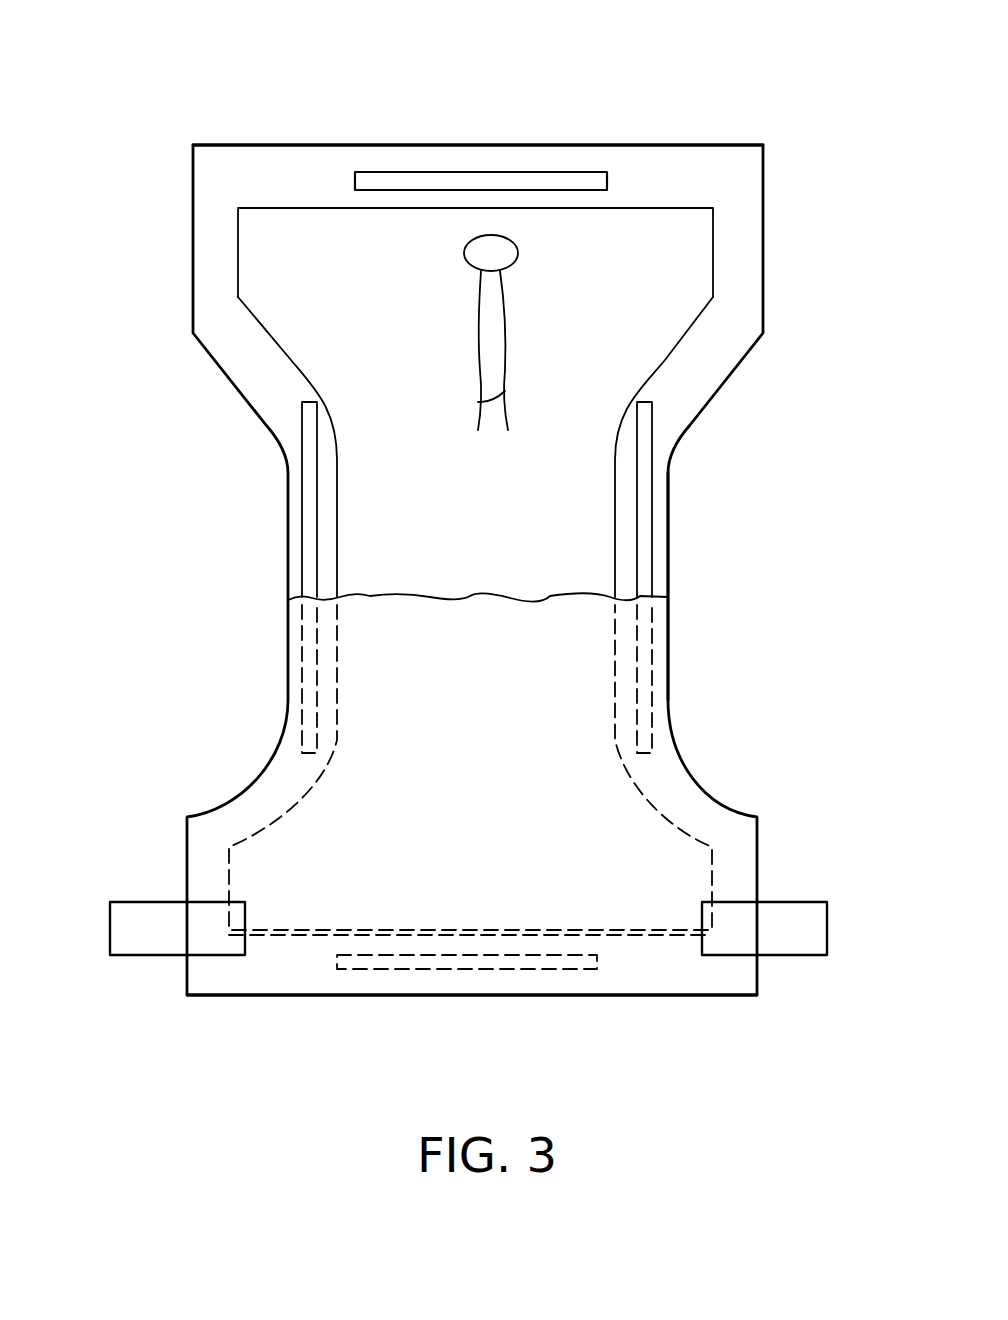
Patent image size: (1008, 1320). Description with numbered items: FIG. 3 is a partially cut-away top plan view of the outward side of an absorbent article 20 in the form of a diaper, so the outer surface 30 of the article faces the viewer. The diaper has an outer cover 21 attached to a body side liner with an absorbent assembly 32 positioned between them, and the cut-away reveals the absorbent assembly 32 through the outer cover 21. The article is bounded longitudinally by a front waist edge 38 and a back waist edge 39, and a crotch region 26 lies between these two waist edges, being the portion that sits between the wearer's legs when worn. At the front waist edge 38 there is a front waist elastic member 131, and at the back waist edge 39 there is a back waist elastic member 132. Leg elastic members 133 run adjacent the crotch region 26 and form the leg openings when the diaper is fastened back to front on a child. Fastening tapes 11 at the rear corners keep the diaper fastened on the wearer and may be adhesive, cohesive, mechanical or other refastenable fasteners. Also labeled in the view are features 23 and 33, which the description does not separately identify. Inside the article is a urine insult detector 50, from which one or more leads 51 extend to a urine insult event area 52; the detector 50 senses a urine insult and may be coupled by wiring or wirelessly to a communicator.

The absorbent article 20 is at (182, 1028).
The front waist edge 38 is at (268, 144).
The first waist region 23 is at (653, 160).
The absorbent assembly 32 is at (630, 346).
The longitudinal side edge 33 is at (240, 390).
The outer surface 30 is at (410, 625).
The outer cover 21 is at (626, 985).
The back waist edge 39 is at (257, 997).
The crotch region 26 is at (675, 638).
The front waist elastic member 131 is at (418, 172).
The back waist elastic member 132 is at (386, 970).
The leg elastic members 133 is at (310, 529).
The fastening tapes 11 is at (113, 929).
The urine insult detector 50 is at (513, 267).
The leads 51 is at (480, 412).
The urine insult event area 52 is at (492, 455).